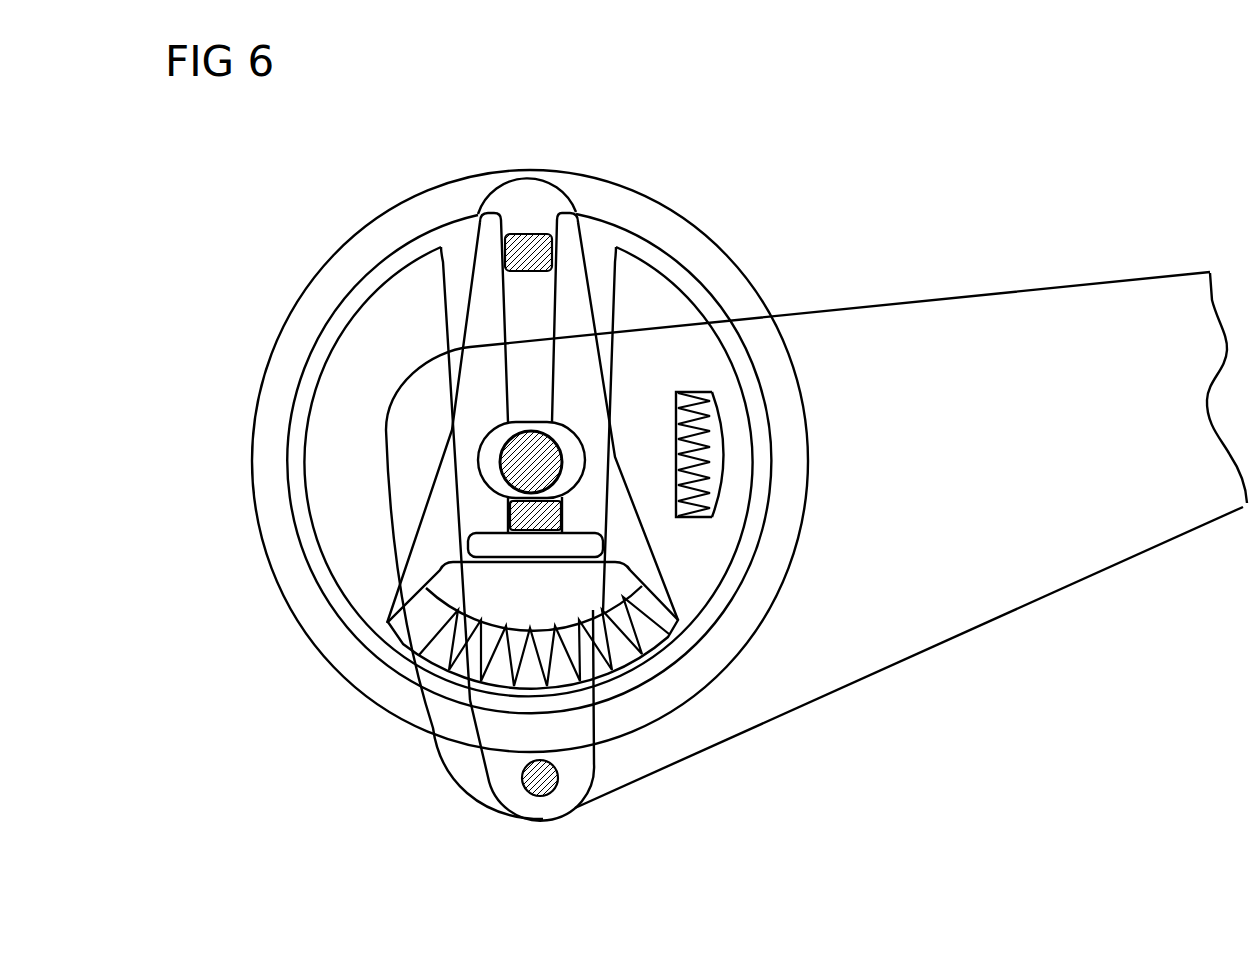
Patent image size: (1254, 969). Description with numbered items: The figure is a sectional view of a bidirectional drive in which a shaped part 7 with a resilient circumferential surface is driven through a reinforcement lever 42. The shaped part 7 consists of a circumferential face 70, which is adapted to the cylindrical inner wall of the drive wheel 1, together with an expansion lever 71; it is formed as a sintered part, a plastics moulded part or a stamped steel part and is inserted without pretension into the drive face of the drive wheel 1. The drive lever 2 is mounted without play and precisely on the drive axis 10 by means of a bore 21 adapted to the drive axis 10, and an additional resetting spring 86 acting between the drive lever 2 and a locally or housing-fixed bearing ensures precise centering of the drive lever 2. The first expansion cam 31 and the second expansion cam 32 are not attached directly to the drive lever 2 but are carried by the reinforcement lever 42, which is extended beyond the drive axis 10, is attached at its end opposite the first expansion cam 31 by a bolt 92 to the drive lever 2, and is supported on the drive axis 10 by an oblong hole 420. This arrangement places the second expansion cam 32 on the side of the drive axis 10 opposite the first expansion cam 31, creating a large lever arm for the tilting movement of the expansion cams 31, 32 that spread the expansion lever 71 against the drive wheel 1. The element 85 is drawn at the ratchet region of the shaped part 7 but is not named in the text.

The drive wheel 1 is at (757, 597).
The drive lever 2 is at (982, 562).
The shaped part 7 is at (312, 589).
The drive axis 10 is at (498, 452).
The bore 21 is at (503, 467).
The first expansion cam 31 is at (533, 234).
The second expansion cam 32 is at (565, 522).
The reinforcement lever 42 is at (508, 768).
The circumferential face 70 is at (340, 315).
The expansion lever 71 is at (572, 300).
The ratchet spring housing 85 is at (620, 650).
The resetting spring 86 is at (703, 423).
The bolt 92 is at (556, 784).
The oblong hole 420 is at (580, 433).